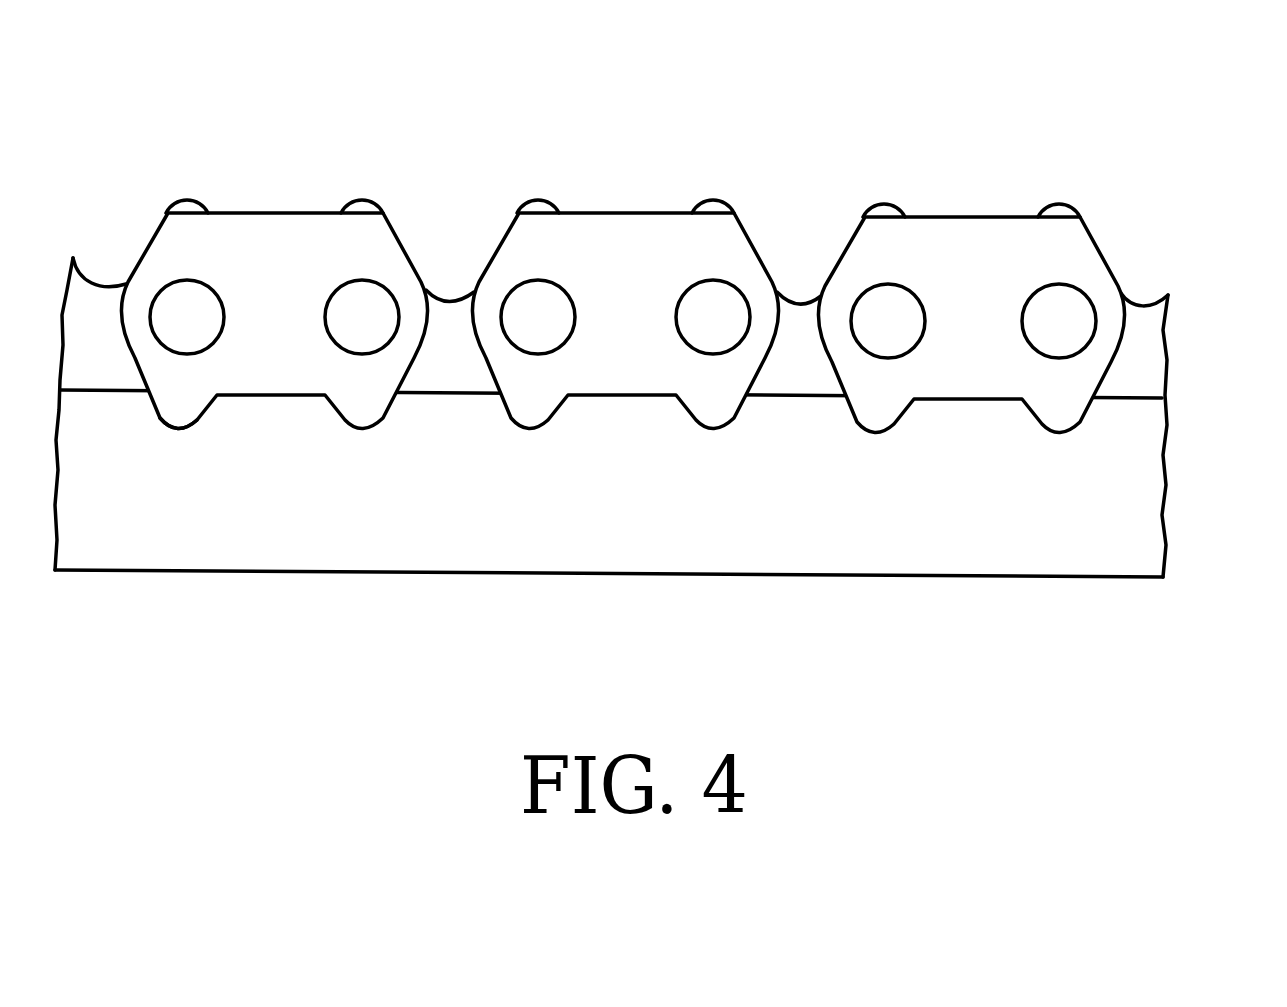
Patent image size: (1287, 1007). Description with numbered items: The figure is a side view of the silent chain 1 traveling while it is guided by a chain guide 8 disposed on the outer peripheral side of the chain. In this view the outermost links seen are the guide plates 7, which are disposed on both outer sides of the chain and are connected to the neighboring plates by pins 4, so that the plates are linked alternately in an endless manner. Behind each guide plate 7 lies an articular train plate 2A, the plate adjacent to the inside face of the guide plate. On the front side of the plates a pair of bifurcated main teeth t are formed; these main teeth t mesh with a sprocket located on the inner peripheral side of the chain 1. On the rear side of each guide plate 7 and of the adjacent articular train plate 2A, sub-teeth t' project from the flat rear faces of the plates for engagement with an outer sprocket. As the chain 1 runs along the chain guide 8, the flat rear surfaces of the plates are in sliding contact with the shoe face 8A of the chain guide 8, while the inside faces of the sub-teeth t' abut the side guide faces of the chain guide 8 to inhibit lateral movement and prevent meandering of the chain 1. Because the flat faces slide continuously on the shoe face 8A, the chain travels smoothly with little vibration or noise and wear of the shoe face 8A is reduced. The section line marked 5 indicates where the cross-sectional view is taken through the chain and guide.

The chain 1 is at (620, 278).
The articular train plate 2A is at (447, 383).
The pin 4 is at (375, 292).
The sprocket 5 is at (720, 160).
The guide plate 7 is at (293, 230).
The chain guide 8 is at (372, 553).
The shoe face 8A is at (1133, 397).
The main teeth t is at (623, 170).
The sub-teeth t' is at (162, 451).